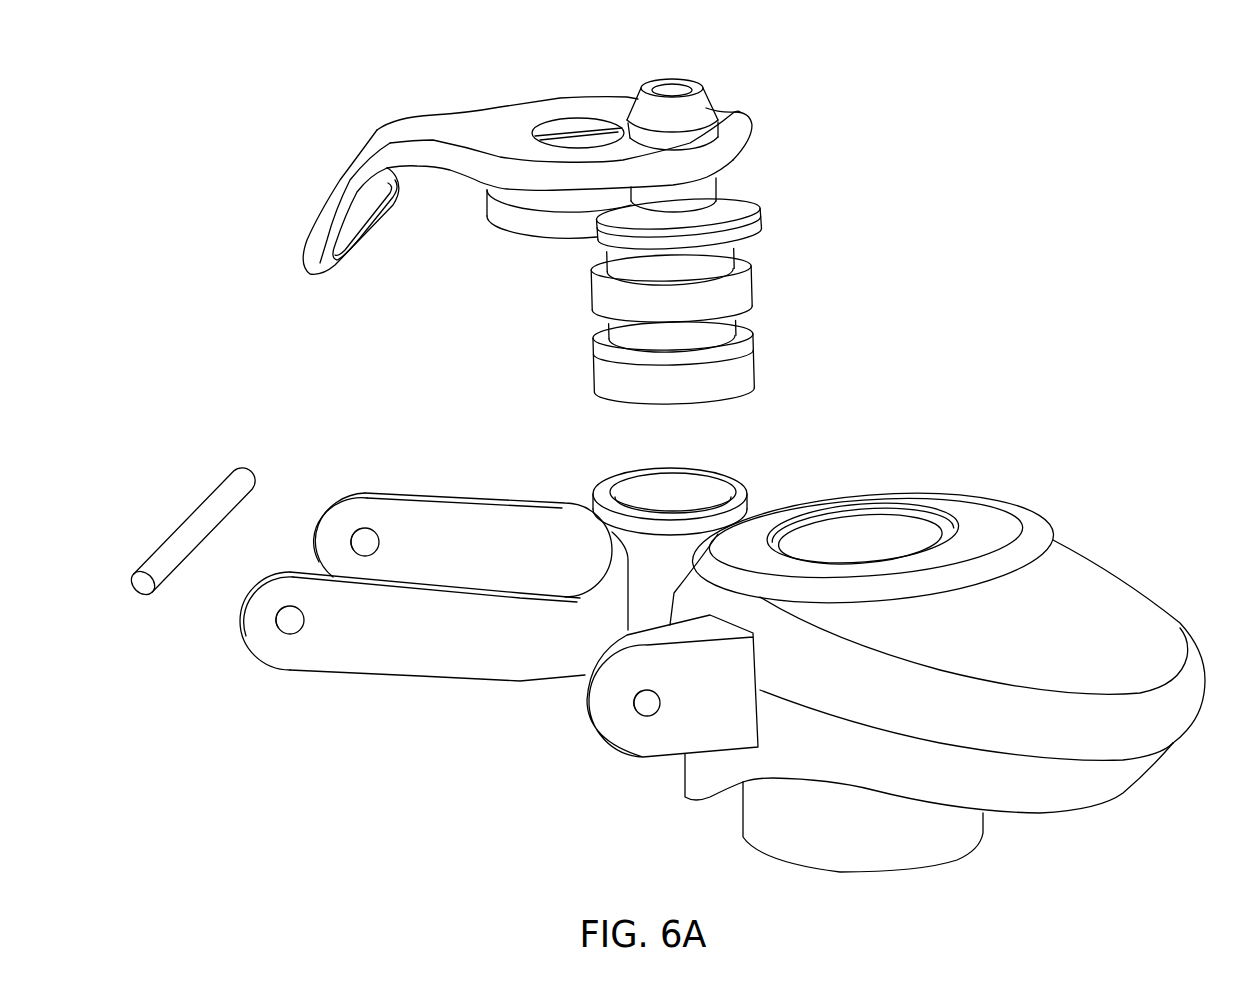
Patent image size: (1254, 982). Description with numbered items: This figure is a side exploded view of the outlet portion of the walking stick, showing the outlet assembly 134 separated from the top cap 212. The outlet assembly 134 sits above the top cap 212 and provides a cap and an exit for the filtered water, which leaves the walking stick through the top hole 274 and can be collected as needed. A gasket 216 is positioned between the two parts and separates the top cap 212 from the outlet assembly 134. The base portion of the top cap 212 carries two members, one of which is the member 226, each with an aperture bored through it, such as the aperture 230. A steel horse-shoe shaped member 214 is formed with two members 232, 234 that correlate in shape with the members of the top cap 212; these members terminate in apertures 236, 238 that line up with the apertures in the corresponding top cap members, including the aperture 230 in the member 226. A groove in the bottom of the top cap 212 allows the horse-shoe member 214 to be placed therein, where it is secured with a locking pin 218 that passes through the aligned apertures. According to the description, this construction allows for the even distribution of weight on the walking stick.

The outlet assembly 134 is at (807, 82).
The top hole 274 is at (673, 90).
The locking pin 218 is at (200, 520).
The member of horse-shoe member 234 is at (455, 537).
The aperture 238 is at (368, 537).
The horse-shoe shaped member 214 is at (420, 668).
The member of horse-shoe member 232 is at (238, 622).
The aperture 236 is at (288, 635).
The gasket 216 is at (745, 488).
The top cap 212 is at (1103, 577).
The member of top cap 226 is at (653, 750).
The aperture 230 is at (633, 708).